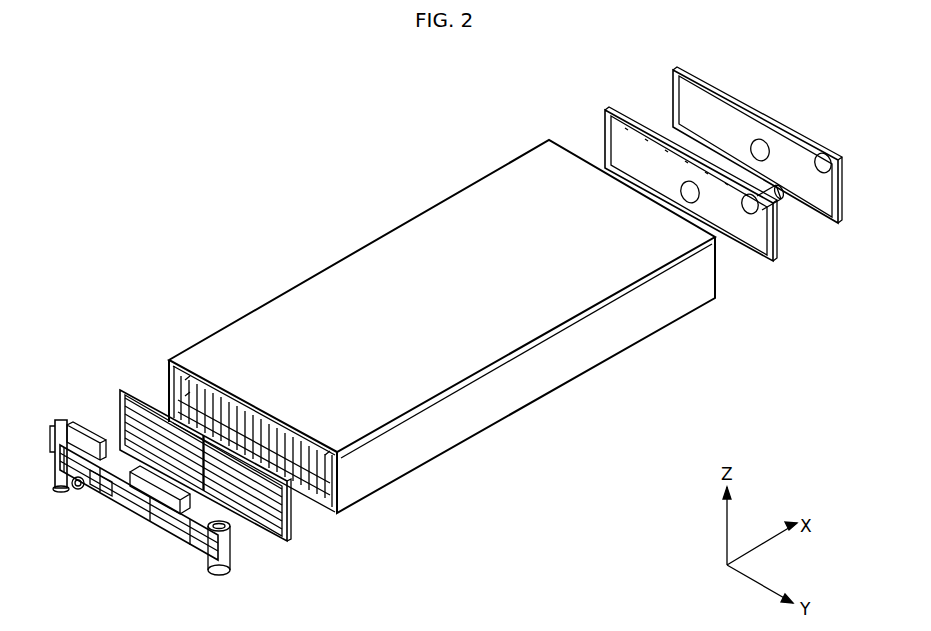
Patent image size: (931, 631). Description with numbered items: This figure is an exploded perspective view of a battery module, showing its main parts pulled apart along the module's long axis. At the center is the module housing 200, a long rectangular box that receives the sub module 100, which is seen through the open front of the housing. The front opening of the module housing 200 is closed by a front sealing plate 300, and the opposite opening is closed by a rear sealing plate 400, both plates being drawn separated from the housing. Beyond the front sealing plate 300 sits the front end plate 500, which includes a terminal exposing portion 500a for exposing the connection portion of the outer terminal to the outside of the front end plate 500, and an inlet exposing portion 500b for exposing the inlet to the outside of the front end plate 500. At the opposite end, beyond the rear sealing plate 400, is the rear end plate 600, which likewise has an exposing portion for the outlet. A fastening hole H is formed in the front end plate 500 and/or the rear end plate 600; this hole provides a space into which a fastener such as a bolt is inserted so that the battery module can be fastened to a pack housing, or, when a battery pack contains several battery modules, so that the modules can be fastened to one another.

The sub module 100 is at (331, 506).
The module housing 200 is at (375, 262).
The front sealing plate 300 is at (288, 542).
The rear sealing plate 400 is at (755, 259).
The front end plate 500 is at (178, 548).
The terminal exposing portion 500a is at (88, 445).
The inlet exposing portion 500b is at (80, 490).
The rear end plate 600 is at (791, 139).
The fastening hole H is at (237, 524).